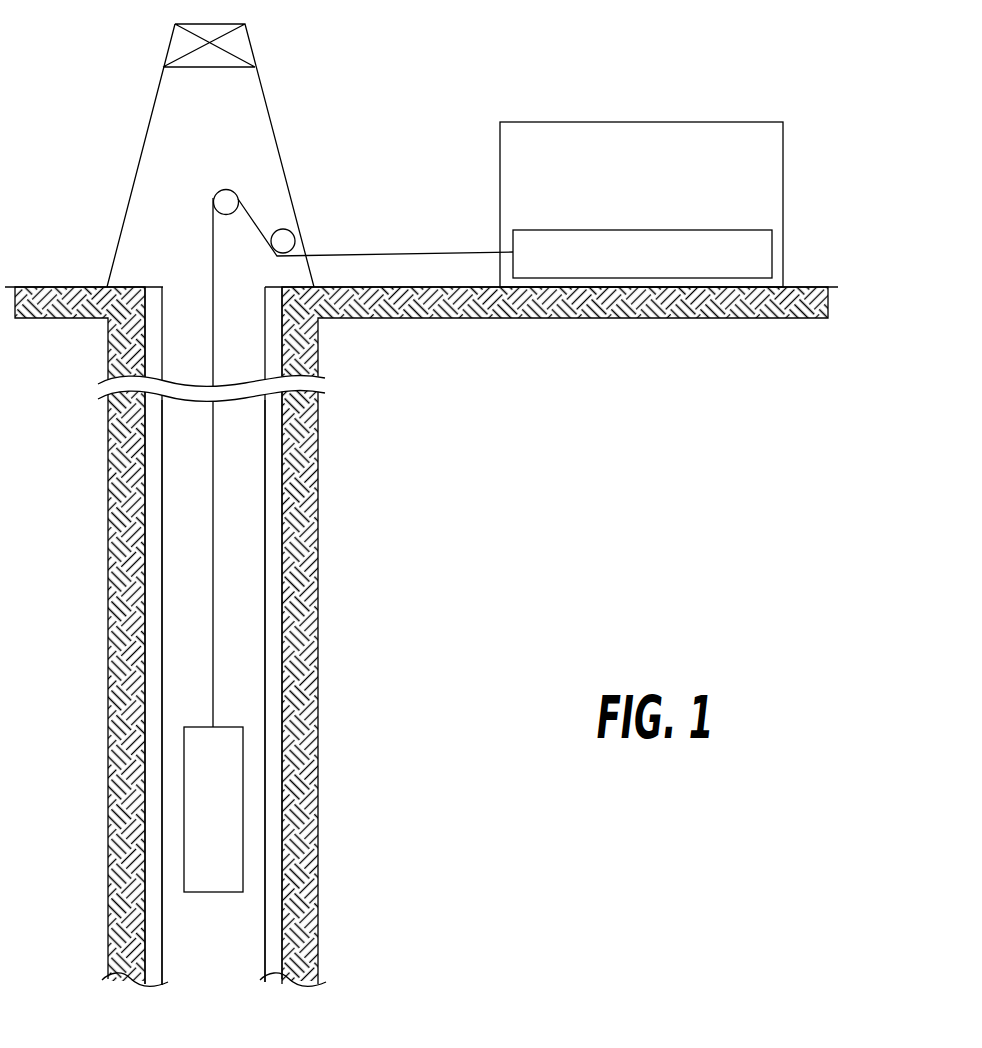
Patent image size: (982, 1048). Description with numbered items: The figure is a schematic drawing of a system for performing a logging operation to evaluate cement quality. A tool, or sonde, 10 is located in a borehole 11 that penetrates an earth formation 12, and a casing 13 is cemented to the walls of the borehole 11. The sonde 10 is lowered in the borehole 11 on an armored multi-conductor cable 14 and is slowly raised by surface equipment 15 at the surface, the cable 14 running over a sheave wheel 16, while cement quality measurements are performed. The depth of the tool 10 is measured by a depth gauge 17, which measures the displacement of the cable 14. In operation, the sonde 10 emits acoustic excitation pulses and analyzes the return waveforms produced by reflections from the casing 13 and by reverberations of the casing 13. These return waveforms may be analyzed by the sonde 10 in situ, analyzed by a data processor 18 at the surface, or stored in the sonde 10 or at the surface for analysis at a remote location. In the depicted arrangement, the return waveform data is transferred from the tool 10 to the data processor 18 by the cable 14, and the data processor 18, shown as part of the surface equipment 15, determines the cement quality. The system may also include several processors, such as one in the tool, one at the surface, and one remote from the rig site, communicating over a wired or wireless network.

The tool 10 is at (213, 967).
The borehole 11 is at (362, 421).
The earth formation 12 is at (422, 492).
The casing 13 is at (392, 632).
The armored multi-conductor cable 14 is at (212, 268).
The surface equipment 15 is at (758, 78).
The sheave wheel 16 is at (223, 198).
The depth gauge 17 is at (367, 133).
The data processor 18 is at (890, 216).